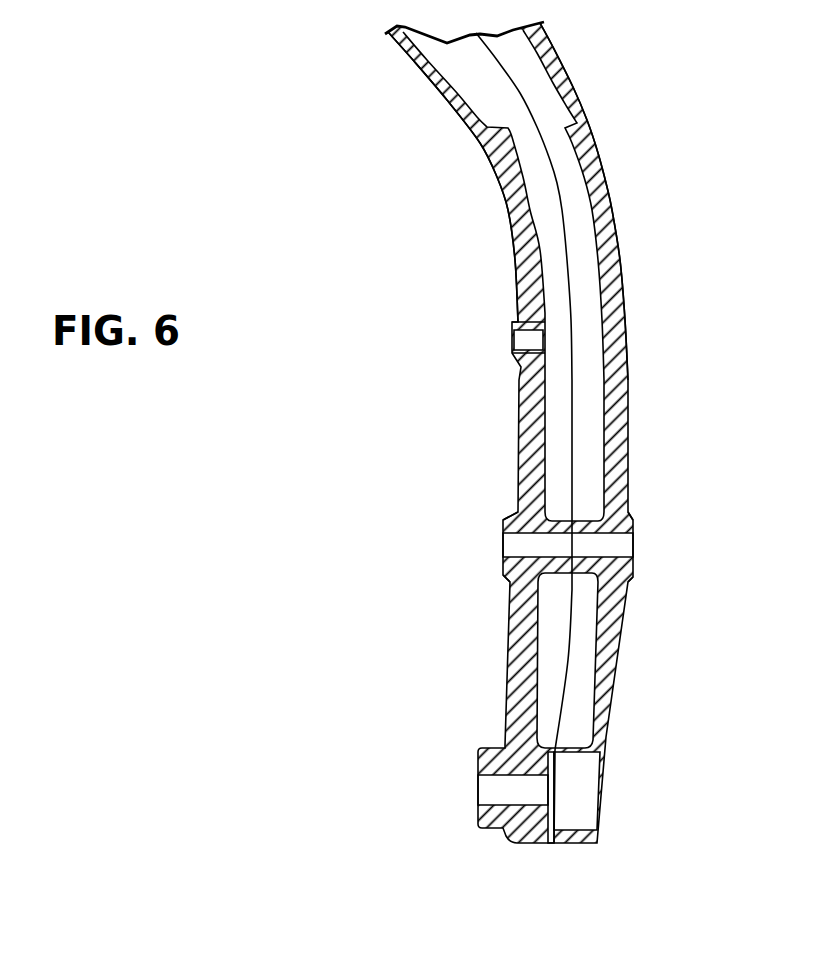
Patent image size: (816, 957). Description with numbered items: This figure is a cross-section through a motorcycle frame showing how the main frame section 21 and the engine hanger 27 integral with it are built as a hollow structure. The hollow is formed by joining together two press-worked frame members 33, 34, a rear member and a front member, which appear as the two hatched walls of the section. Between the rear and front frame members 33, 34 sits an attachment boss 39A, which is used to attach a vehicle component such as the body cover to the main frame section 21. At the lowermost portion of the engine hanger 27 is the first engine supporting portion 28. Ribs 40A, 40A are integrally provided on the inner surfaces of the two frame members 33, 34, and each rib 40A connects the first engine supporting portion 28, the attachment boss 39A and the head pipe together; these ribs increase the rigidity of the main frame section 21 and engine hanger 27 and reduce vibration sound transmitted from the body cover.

The main frame section 21 is at (722, 134).
The frame member 33 is at (500, 194).
The frame member 34 is at (616, 278).
The rib 40A is at (543, 283).
The attachment boss 39A is at (503, 526).
The engine hanger 27 is at (500, 632).
The first engine supporting portion 28 is at (541, 843).